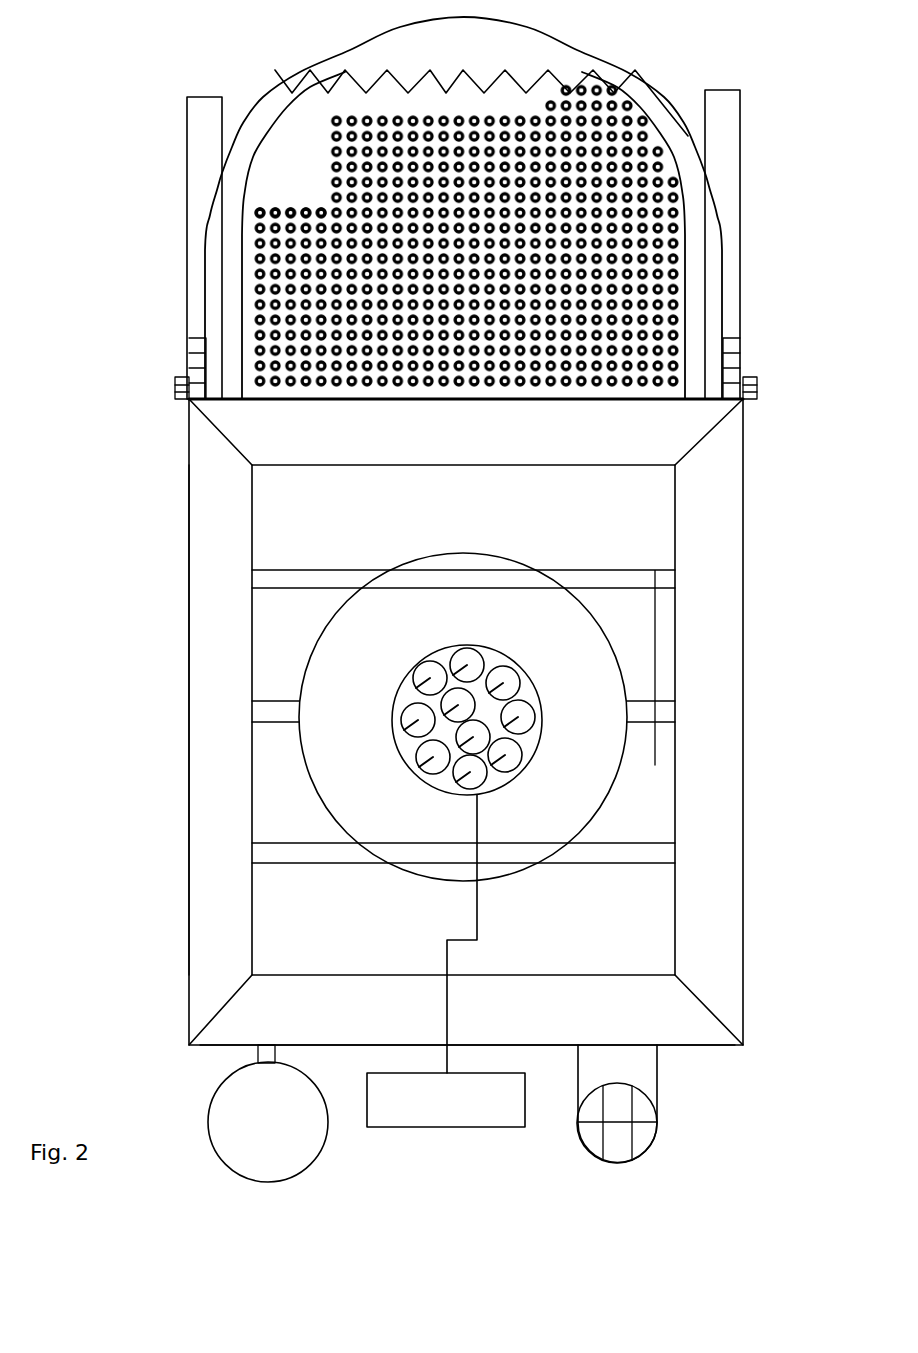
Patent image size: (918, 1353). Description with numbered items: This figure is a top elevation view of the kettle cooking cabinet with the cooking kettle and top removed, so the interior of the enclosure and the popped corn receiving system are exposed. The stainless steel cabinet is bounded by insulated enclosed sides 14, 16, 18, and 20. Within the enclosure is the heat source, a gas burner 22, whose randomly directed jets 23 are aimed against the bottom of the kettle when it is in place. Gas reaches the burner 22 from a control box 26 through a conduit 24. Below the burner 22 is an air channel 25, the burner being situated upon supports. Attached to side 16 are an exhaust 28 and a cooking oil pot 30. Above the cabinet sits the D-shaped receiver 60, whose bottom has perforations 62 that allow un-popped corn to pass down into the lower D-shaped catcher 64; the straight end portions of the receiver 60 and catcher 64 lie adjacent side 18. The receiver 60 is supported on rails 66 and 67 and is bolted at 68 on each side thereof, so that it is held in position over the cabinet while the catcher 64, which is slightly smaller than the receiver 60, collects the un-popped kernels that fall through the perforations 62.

The insulated enclosed side 14 is at (747, 818).
The insulated enclosed side 16 is at (222, 1050).
The insulated enclosed side 18 is at (612, 400).
The insulated enclosed side 20 is at (189, 793).
The burner 22 is at (410, 757).
The jets 23 is at (523, 712).
The conduit 24 is at (447, 932).
The air channel 25 is at (298, 737).
The control box 26 is at (445, 1098).
The exhaust 28 is at (643, 1072).
The cooking oil pot 30 is at (213, 1131).
The D-shaped receiver 60 is at (454, 113).
The perforations 62 is at (321, 207).
The D-shaped catcher 64 is at (465, 51).
The rail 66 is at (738, 118).
The rail 67 is at (190, 150).
The bolts 68 is at (176, 383).